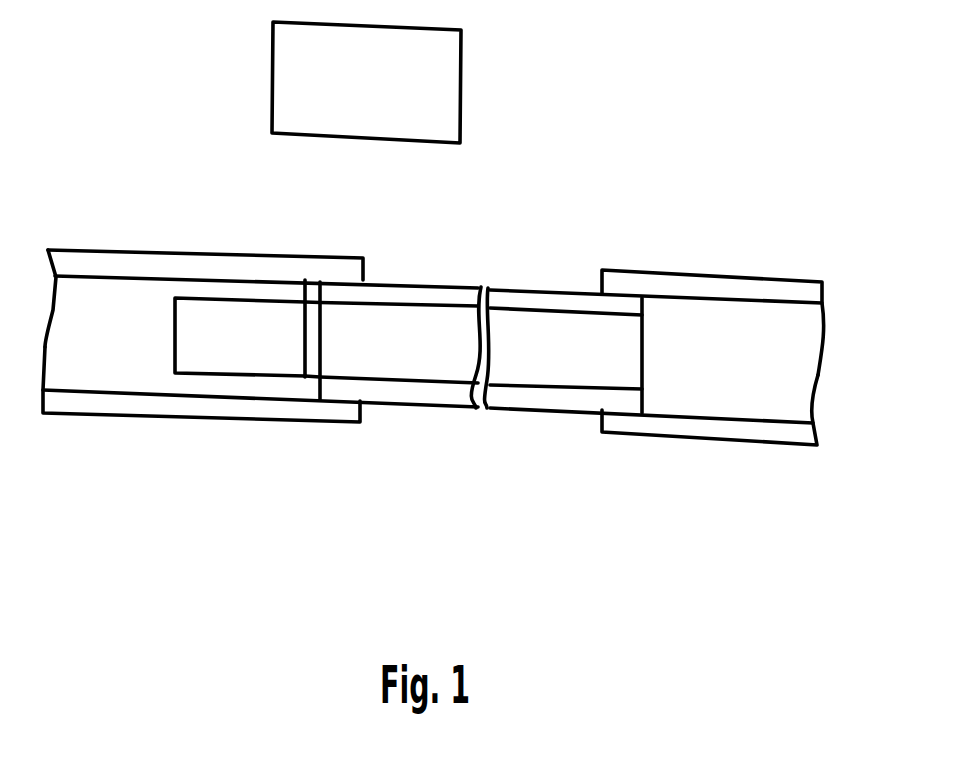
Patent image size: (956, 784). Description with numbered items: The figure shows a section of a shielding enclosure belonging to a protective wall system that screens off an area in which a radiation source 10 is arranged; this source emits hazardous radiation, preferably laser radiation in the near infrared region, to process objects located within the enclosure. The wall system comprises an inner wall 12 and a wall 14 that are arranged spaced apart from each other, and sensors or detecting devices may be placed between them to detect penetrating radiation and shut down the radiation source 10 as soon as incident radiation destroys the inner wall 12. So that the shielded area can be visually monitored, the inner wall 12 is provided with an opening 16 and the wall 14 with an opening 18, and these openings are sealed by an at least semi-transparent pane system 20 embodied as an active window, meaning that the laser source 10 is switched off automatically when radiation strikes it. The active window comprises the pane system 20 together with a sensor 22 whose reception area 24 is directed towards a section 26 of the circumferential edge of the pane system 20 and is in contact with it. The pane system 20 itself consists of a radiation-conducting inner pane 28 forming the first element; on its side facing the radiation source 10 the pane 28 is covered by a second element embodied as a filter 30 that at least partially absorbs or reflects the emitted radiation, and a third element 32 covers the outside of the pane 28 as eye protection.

The radiation source 10 is at (460, 43).
The inner wall 12 is at (102, 263).
The wall 14 is at (100, 405).
The opening 16 is at (538, 282).
The opening 18 is at (538, 418).
The pane system 20 is at (412, 407).
The sensor 22 is at (195, 338).
The reception area 24 is at (310, 308).
The section of the circumferential edge 26 is at (323, 336).
The inner pane 28 is at (457, 330).
The filter 30 is at (432, 297).
The third element 32 is at (462, 407).